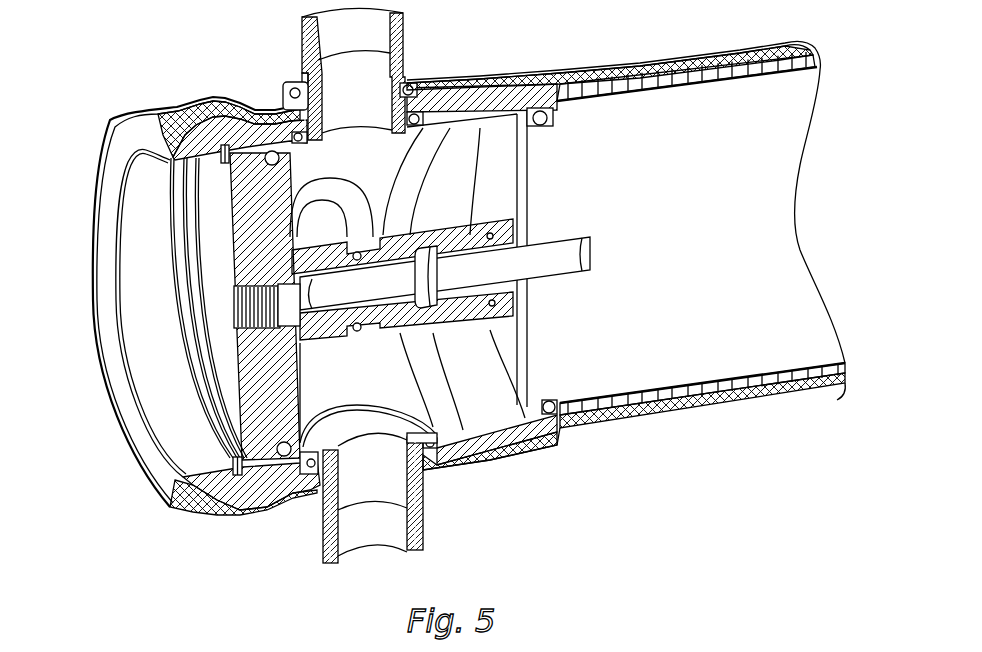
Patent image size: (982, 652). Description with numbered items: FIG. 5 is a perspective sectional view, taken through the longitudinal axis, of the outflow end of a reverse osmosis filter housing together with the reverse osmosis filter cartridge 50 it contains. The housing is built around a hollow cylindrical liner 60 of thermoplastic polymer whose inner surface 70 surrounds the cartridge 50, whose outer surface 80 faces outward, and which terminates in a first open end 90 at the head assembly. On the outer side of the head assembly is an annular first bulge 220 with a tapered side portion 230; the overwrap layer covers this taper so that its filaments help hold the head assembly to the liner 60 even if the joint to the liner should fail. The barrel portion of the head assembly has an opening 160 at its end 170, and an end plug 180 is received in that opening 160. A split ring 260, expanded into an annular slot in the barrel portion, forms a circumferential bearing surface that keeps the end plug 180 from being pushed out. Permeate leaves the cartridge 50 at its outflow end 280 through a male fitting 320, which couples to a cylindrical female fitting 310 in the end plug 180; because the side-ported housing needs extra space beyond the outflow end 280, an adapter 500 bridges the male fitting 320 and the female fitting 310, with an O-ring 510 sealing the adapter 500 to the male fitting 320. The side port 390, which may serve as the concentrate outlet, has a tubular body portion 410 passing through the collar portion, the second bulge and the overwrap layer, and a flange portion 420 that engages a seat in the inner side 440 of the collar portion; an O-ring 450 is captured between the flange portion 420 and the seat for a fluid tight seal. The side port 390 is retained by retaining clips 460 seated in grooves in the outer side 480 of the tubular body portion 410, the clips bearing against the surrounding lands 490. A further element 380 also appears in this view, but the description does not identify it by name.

The reverse osmosis filter cartridge 50 is at (720, 275).
The liner 60 is at (713, 397).
The inner surface 70 is at (633, 385).
The outer surface 80 is at (793, 397).
The first open end 90 is at (568, 428).
The opening 160 is at (150, 384).
The end 170 is at (135, 192).
The end plug 180 is at (200, 263).
The first bulge 220 is at (218, 110).
The tapered side portion 230 is at (160, 128).
The split ring 260 is at (230, 457).
The outflow end 280 is at (240, 307).
The female fitting 310 is at (323, 343).
The male fitting 320 is at (437, 283).
The O-ring seal 380 is at (545, 413).
The side port 390 is at (423, 527).
The tubular body portion 410 is at (403, 43).
The flange portion 420 is at (403, 147).
The inner side 440 is at (407, 400).
The O-ring 450 is at (298, 137).
The retaining clips 460 is at (307, 90).
The outer side 480 is at (403, 67).
The lands 490 is at (293, 87).
The adapter 500 is at (413, 233).
The O-ring 510 is at (490, 243).